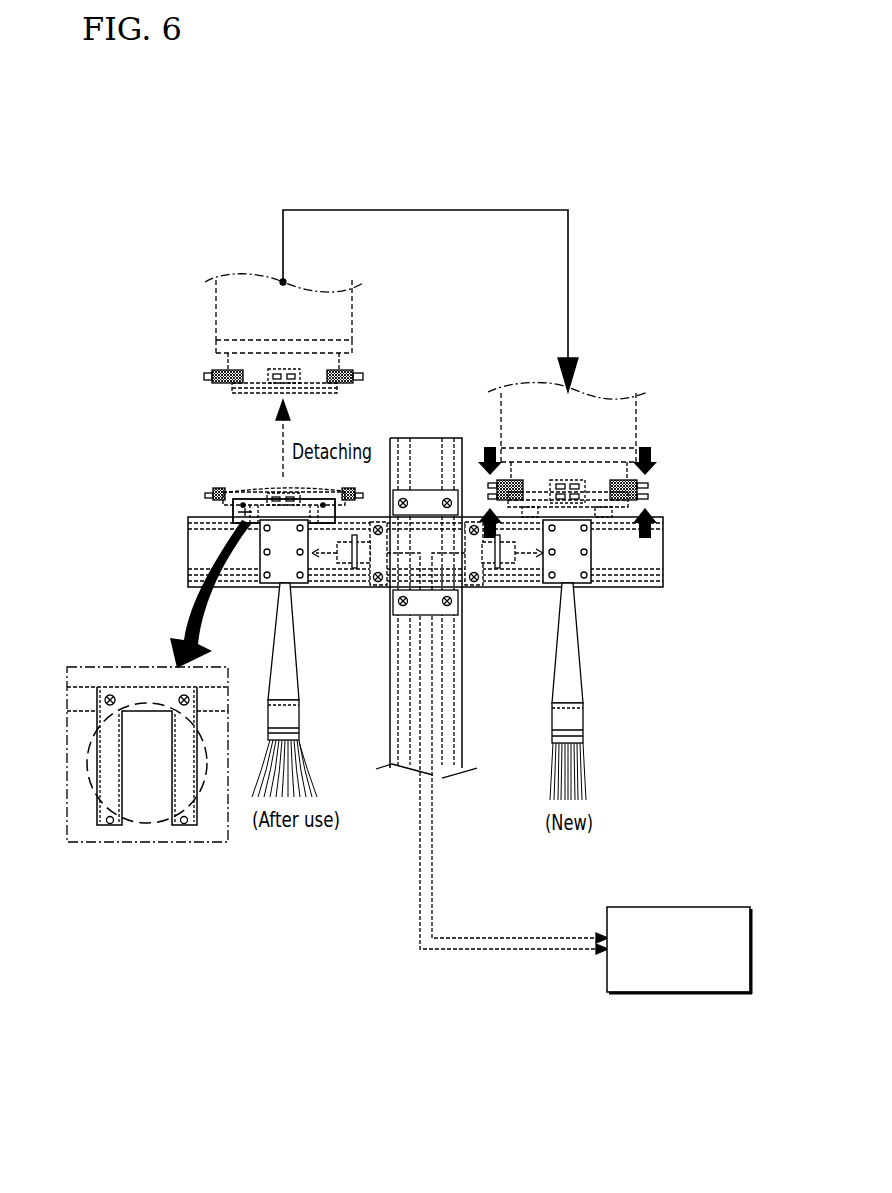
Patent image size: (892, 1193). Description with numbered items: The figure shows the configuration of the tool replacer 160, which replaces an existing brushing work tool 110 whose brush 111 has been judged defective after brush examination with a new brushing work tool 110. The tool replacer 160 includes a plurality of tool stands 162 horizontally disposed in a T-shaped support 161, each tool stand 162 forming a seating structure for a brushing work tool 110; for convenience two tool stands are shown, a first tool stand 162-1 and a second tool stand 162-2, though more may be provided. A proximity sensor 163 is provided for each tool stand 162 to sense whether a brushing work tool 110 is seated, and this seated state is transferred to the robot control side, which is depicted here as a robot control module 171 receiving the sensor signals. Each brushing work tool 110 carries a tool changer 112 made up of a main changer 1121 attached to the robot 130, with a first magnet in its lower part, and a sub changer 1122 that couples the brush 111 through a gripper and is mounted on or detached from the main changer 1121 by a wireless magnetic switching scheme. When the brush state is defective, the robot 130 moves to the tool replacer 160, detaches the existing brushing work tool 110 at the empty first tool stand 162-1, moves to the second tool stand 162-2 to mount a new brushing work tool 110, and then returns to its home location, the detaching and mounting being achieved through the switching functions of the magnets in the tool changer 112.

The brushing work tool 110 is at (306, 590).
The brush 111 is at (298, 700).
The tool changer 112 is at (442, 446).
The main changer 1121 is at (244, 364).
The sub changer 1122 is at (212, 490).
The robot 130 is at (236, 285).
The tool replacer 160 is at (424, 414).
The T-shaped support 161 is at (665, 552).
The tool stand 162 is at (413, 688).
The first tool stand 162-1 is at (233, 514).
The second tool stand 162-2 is at (607, 513).
The proximity sensor 163 is at (354, 569).
The robot path generator 171 is at (650, 994).